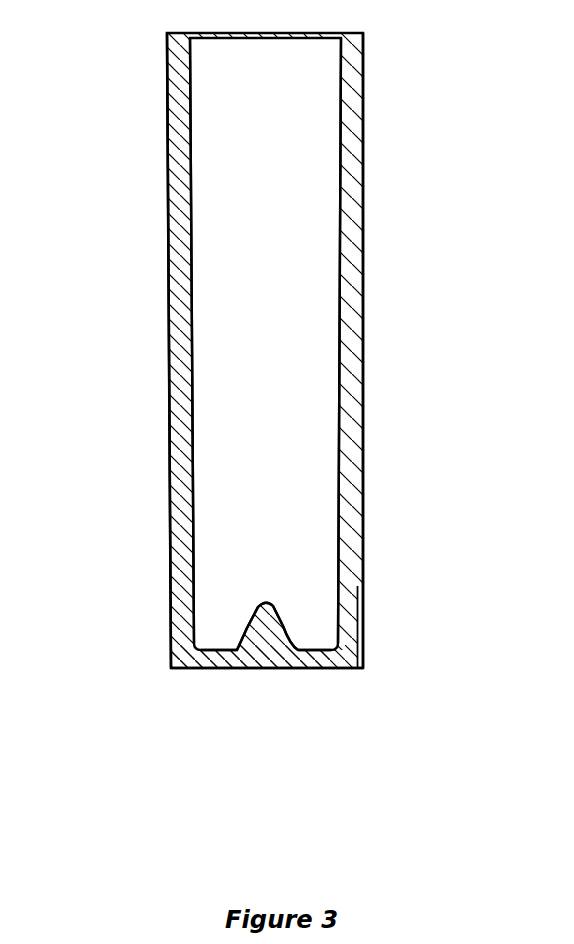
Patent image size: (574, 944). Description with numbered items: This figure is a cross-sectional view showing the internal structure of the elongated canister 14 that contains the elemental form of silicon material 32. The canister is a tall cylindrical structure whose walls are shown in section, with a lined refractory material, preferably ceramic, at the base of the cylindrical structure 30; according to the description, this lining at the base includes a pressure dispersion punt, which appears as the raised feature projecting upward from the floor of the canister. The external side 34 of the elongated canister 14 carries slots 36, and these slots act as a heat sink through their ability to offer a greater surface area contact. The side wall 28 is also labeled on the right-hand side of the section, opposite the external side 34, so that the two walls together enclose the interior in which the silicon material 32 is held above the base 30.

The elongated canister 14 is at (362, 125).
The side wall 28 is at (350, 350).
The base of the cylindrical structure 30 is at (220, 666).
The elemental form of silicon material 32 is at (283, 623).
The external side 34 is at (170, 302).
The slots 36 is at (360, 643).